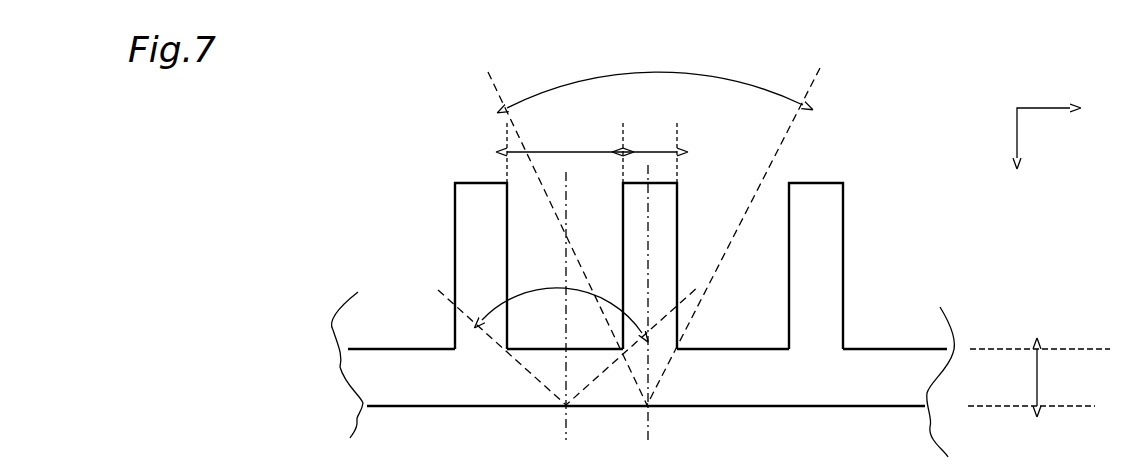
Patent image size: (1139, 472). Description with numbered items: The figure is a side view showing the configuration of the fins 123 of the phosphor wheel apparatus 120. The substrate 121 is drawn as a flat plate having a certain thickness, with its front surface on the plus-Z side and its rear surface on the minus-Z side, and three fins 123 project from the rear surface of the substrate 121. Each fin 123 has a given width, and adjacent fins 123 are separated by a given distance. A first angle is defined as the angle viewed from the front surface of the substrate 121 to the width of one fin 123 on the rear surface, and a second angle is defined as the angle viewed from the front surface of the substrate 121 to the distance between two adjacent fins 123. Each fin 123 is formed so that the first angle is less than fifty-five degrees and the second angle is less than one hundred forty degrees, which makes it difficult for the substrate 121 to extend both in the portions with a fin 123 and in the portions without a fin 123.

The phosphor wheel apparatus 120 is at (350, 89).
The substrate 121 is at (747, 375).
The fin 123 is at (662, 218).